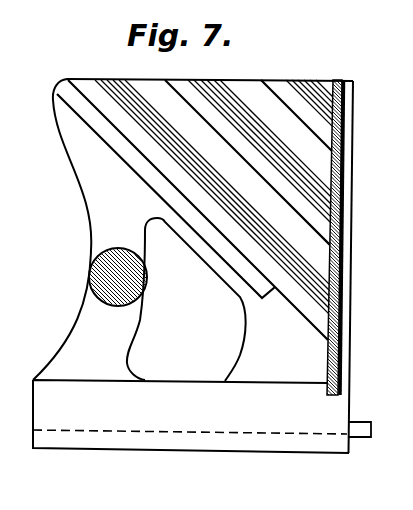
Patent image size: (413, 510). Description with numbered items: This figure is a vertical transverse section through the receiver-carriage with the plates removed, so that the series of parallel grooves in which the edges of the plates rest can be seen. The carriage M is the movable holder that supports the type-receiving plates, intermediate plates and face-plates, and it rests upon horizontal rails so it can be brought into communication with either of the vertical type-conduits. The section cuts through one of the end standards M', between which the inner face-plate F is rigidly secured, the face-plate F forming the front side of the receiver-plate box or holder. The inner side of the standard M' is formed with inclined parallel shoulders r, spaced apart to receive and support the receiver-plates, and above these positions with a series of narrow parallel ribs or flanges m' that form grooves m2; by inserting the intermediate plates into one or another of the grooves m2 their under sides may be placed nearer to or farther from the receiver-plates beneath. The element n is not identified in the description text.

The movable carriage M is at (193, 266).
The end standard M' is at (202, 299).
The rib or flange m' is at (192, 201).
The groove m2 is at (308, 82).
The inclined parallel shoulder r is at (248, 162).
The inner face-plate F is at (346, 274).
The roller n is at (122, 280).